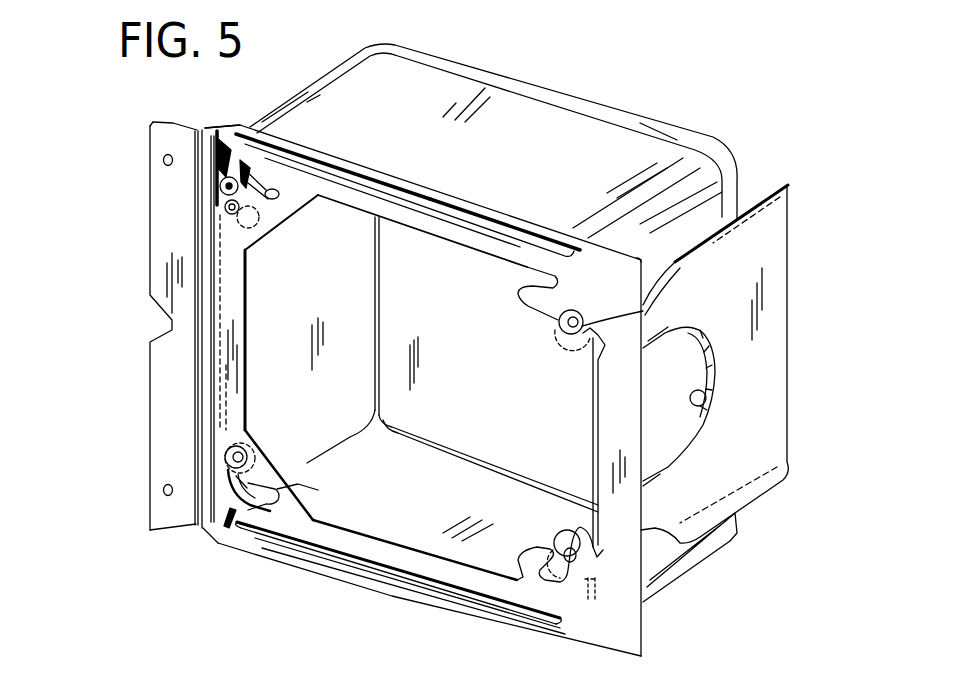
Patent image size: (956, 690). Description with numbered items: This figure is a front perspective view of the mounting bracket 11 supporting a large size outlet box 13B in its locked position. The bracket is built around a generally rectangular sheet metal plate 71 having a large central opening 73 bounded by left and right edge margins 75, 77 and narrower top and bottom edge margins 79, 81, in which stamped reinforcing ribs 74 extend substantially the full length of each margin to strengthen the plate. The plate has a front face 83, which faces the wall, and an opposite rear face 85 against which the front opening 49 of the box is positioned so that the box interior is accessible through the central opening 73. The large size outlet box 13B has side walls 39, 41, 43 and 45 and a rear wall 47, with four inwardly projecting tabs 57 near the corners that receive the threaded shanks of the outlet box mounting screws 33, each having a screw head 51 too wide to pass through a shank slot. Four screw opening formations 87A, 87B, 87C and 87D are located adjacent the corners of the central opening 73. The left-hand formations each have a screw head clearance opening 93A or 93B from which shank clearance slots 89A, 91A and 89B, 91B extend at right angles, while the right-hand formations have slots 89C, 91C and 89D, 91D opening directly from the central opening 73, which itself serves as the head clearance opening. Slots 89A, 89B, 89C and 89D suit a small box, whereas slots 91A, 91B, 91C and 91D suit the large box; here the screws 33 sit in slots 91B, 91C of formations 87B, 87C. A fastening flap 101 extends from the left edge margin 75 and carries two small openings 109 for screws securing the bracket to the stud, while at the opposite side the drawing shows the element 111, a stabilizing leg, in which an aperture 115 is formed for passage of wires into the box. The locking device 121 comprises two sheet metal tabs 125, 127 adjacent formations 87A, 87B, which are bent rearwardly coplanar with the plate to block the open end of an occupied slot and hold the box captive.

The mounting bracket 11 is at (120, 143).
The large size outlet box 13B is at (573, 98).
The outlet box mounting screw 33 is at (560, 313).
The side wall 39 is at (347, 265).
The side wall 41 is at (388, 512).
The side wall 43 is at (743, 185).
The side wall 45 is at (418, 75).
The rear wall 47 is at (430, 385).
The front opening 49 is at (593, 390).
The screw head 51 is at (577, 320).
The inwardly projecting tab 57 is at (262, 228).
The sheet metal plate 71 is at (641, 632).
The central opening 73 is at (287, 500).
The reinforcing rib 74 is at (443, 203).
The left edge margin 75 is at (230, 283).
The right edge margin 77 is at (638, 372).
The top edge margin 79 is at (390, 210).
The bottom edge margin 81 is at (450, 607).
The front face 83 is at (620, 593).
The rear face 85 is at (400, 583).
The screw opening formation 87A is at (230, 134).
The screw opening formation 87B is at (232, 512).
The screw opening formation 87C is at (522, 306).
The screw opening formation 87D is at (540, 533).
The screw shank clearance slot 89A is at (310, 163).
The screw shank clearance slot 89B is at (237, 523).
The screw shank clearance slot 89C is at (530, 270).
The screw shank clearance slot 89D is at (528, 578).
The screw shank clearance slot 91A is at (226, 209).
The screw shank clearance slot 91B is at (225, 446).
The screw shank clearance slot 91C is at (640, 313).
The screw shank clearance slot 91D is at (577, 583).
The screw head clearance opening 93A is at (283, 143).
The screw head clearance opening 93B is at (250, 505).
The fastening flap 101 is at (163, 374).
The small opening 109 is at (160, 164).
The side plate 111 is at (763, 427).
The aperture 115 is at (713, 407).
The locking device 121 is at (213, 131).
The sheet metal tab 125 is at (225, 199).
The sheet metal tab 127 is at (245, 485).